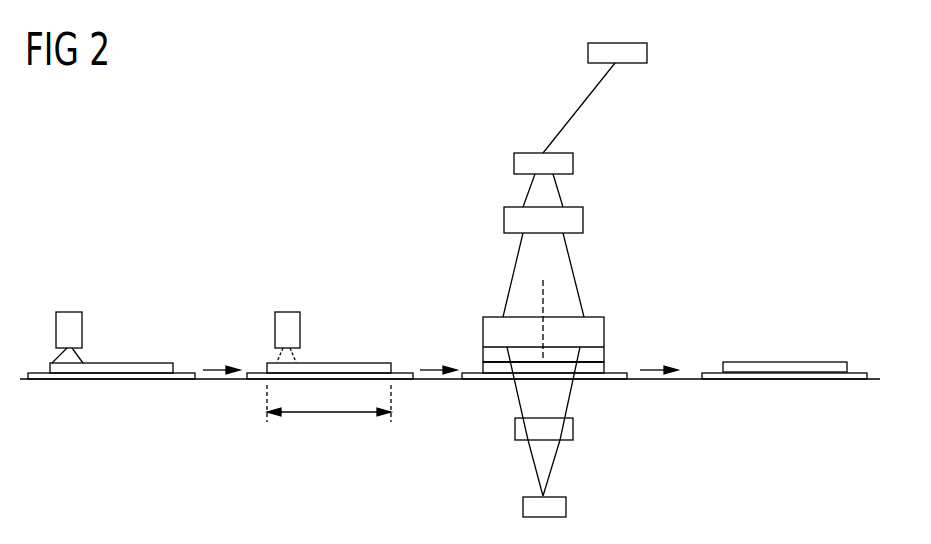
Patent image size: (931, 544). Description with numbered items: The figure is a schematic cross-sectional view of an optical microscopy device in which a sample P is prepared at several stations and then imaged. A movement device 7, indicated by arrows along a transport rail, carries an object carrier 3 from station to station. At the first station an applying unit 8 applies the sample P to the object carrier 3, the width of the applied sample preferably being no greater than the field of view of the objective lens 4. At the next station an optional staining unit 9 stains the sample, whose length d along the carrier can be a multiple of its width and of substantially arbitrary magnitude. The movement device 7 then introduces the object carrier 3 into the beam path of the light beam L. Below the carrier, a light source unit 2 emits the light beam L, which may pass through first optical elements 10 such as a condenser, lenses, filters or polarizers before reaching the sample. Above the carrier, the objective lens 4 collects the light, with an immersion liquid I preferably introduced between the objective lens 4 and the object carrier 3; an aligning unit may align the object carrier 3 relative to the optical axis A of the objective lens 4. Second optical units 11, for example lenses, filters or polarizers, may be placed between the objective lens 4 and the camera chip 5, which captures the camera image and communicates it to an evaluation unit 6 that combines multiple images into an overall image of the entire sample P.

The light source unit 2 is at (566, 507).
The object carrier 3 is at (182, 372).
The objective lens 4 is at (590, 330).
The camera chip 5 is at (573, 164).
The evaluation unit 6 is at (647, 53).
The movement device 7 is at (690, 372).
The applying unit 8 is at (68, 322).
The staining unit 9 is at (288, 322).
The first optical elements 10 is at (515, 428).
The second optical units 11 is at (583, 220).
The sample P is at (112, 365).
The optical axis A is at (540, 300).
The immersion liquid I is at (595, 357).
The light beam L is at (547, 463).
The length of the sample d is at (330, 415).